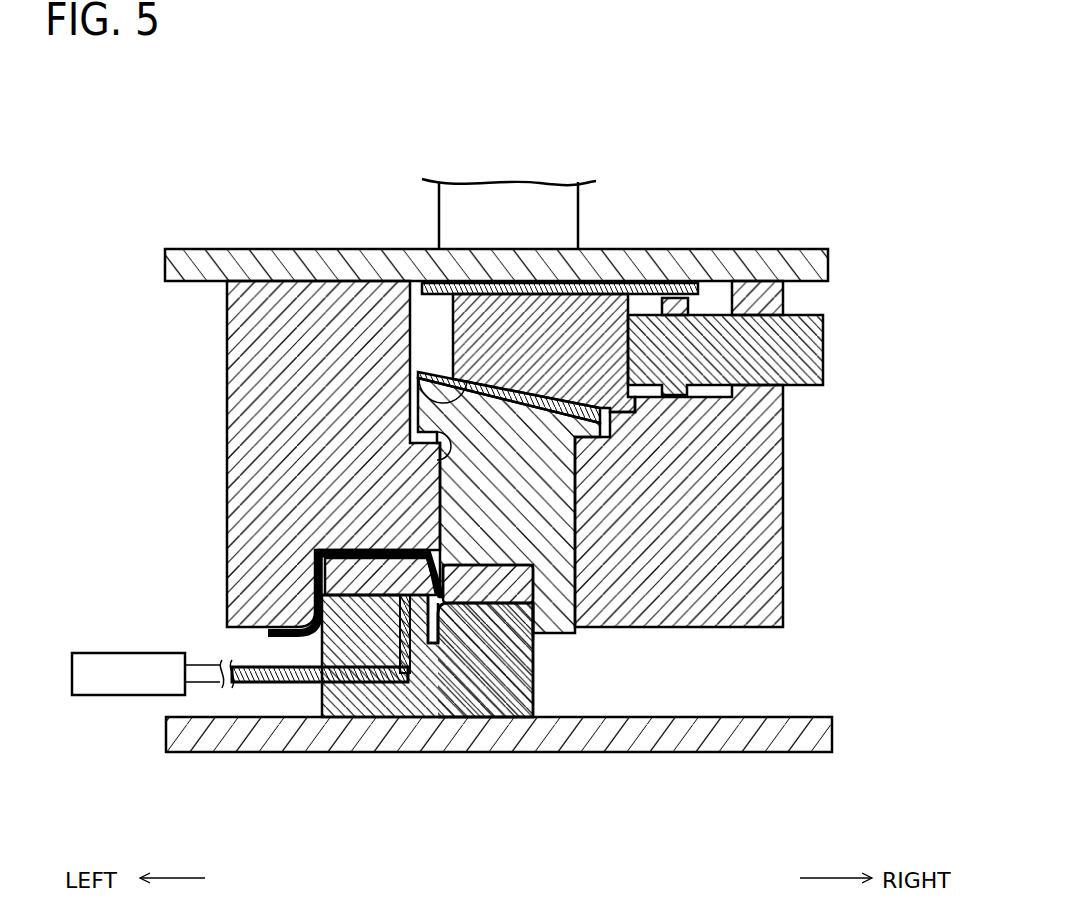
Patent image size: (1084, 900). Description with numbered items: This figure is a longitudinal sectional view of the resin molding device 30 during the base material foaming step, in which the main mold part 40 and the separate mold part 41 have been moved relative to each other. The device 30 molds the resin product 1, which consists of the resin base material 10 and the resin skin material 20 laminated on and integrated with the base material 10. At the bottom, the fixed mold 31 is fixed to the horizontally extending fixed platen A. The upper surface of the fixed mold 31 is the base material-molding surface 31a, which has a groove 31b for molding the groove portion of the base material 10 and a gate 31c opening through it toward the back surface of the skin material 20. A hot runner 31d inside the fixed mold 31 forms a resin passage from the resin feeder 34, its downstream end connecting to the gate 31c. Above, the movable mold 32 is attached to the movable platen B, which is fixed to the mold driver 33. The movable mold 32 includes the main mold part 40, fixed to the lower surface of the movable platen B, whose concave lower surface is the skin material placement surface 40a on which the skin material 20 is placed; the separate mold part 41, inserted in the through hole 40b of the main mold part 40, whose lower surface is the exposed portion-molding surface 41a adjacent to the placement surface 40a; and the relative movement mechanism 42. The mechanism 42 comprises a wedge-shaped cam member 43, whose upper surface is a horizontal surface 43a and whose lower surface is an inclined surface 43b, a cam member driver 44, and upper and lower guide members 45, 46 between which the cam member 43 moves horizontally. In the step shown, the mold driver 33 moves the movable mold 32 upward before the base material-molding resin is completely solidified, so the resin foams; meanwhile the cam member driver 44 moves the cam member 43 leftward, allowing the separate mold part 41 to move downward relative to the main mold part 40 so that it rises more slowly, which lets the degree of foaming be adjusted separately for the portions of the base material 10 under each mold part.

The resin product 1 is at (311, 568).
The resin base material 10 is at (317, 578).
The resin skin material 20 is at (297, 617).
The resin molding device 30 is at (853, 278).
The fixed mold 31 is at (540, 696).
The base material-molding surface 31a is at (545, 625).
The groove 31b is at (458, 612).
The gate 31c is at (395, 598).
The hot runner 31d is at (389, 668).
The movable mold 32 is at (787, 460).
The mold driver 33 is at (578, 203).
The resin feeder 34 is at (112, 699).
The main mold part 40 is at (227, 447).
The skin material placement surface 40a is at (318, 552).
The through hole 40b is at (425, 398).
The separate mold part 41 is at (605, 592).
The exposed portion-molding surface 41a is at (515, 572).
The relative movement mechanism 42 is at (715, 299).
The cam member 43 is at (563, 312).
The horizontal surface 43a is at (483, 293).
The inclined surface 43b is at (425, 383).
The cam member driver 44 is at (825, 348).
The upper guide member 45 is at (672, 282).
The lower guide member 46 is at (613, 435).
The fixed platen A is at (810, 717).
The movable platen B is at (195, 248).